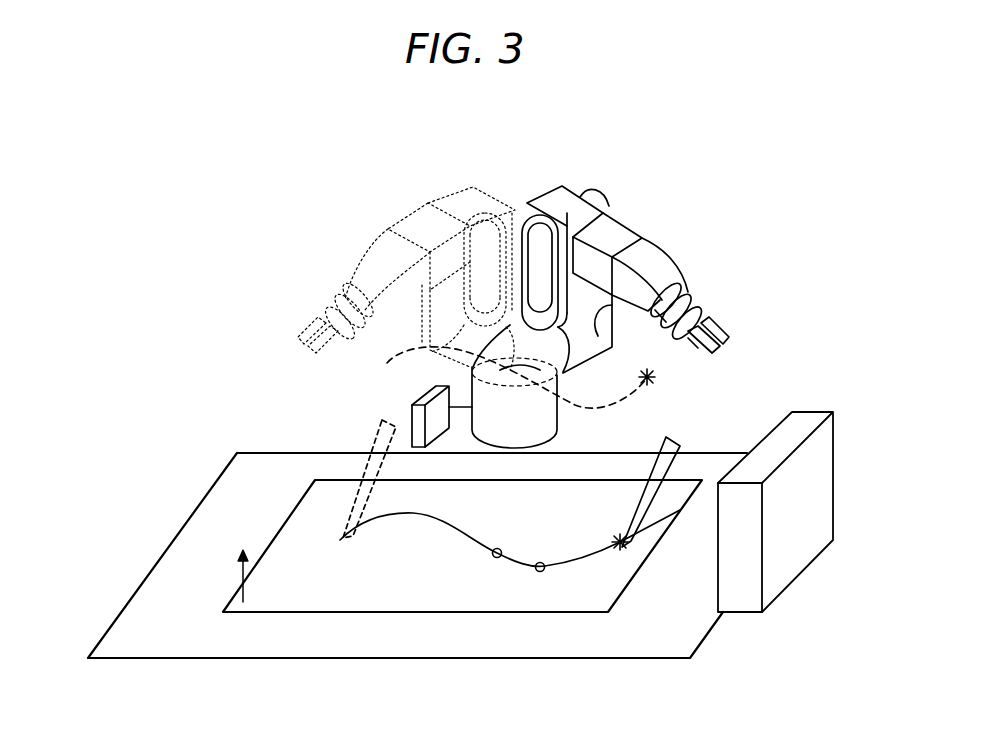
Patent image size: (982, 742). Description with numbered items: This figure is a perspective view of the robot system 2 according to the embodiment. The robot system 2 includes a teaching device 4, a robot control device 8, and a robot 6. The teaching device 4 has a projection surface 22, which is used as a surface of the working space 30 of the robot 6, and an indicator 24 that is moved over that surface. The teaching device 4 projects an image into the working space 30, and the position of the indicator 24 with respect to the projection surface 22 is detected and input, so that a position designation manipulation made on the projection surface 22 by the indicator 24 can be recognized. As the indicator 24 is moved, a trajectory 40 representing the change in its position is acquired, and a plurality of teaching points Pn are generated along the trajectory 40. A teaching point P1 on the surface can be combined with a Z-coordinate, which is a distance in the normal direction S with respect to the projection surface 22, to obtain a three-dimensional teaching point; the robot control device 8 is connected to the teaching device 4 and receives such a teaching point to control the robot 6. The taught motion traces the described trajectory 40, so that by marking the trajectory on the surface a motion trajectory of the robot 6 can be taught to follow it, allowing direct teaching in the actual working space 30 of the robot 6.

The robot system 2 is at (750, 191).
The teaching device 4 is at (803, 406).
The robot 6 is at (519, 174).
The robot control device 8 is at (412, 405).
The projection surface 22 is at (277, 535).
The indicator 24 is at (670, 456).
The working space 30 is at (430, 578).
The trajectory 40 is at (413, 515).
The teaching points Pn is at (497, 553).
The teaching point P1 is at (620, 542).
The normal direction S is at (233, 576).